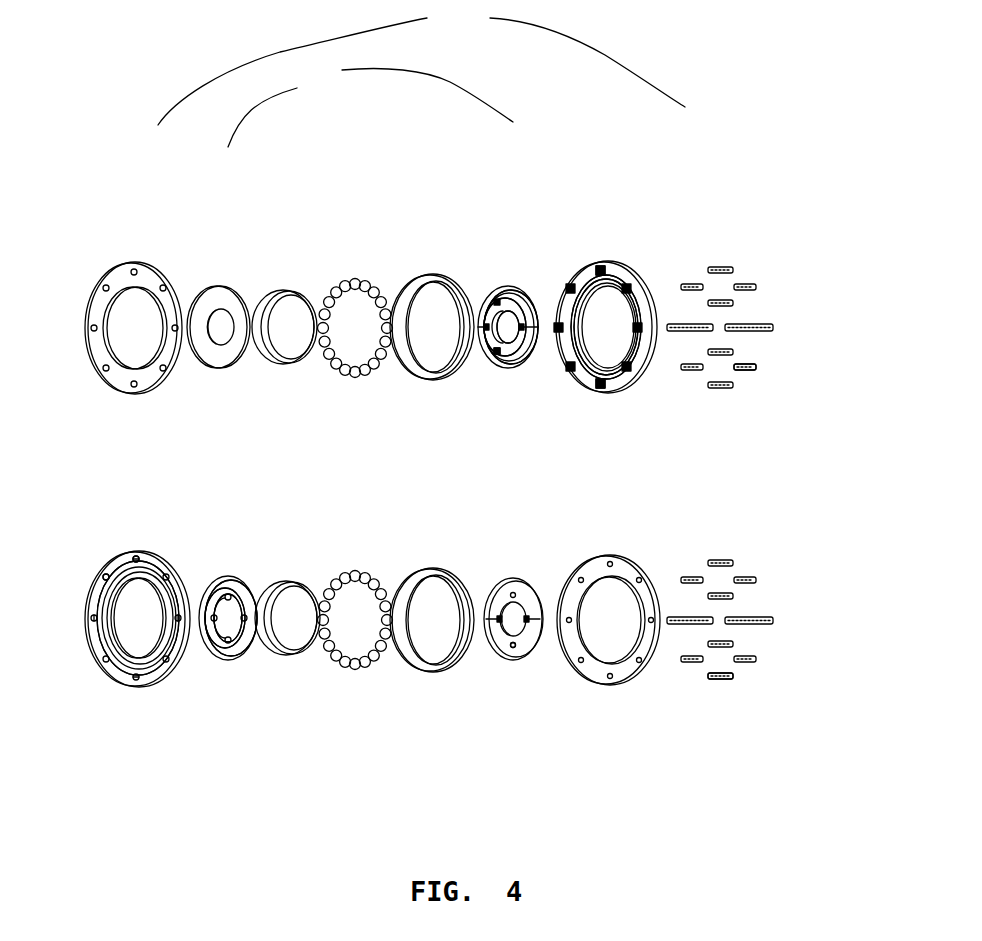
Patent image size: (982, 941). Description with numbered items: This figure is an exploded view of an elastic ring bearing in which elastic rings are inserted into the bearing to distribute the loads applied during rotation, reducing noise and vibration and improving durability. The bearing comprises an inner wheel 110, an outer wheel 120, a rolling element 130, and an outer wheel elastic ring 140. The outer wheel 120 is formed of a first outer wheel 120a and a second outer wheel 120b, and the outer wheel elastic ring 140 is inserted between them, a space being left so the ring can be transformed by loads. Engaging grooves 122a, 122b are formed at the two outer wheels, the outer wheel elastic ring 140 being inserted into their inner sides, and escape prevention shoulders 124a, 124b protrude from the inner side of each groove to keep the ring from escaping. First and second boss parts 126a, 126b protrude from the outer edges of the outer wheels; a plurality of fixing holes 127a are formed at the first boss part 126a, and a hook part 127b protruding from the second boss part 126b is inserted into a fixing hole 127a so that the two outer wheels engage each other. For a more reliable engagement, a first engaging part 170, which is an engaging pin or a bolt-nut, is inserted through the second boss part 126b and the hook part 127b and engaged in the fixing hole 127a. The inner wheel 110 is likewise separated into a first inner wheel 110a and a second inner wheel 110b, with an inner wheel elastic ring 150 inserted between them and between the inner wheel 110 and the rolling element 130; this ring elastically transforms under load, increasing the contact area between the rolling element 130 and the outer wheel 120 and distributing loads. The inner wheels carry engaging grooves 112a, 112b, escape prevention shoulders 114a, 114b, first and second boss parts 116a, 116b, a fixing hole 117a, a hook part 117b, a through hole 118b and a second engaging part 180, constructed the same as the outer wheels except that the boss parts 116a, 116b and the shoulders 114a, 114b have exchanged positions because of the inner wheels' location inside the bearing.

The inner wheel 110 is at (370, 105).
The outer wheel 120 is at (421, 65).
The first inner wheel 110a is at (209, 277).
The second inner wheel 110b is at (522, 285).
The engaging groove 112a is at (213, 660).
The engaging groove 112b is at (510, 368).
The escape prevention shoulder 114a is at (213, 576).
The escape prevention shoulder 114b is at (520, 373).
The first boss part 116a is at (248, 655).
The second boss part 116b is at (484, 298).
The fixing hole 117a is at (232, 578).
The hook part 117b is at (537, 300).
The through hole 118b is at (514, 575).
The first outer wheel 120a is at (135, 257).
The second outer wheel 120b is at (640, 265).
The engaging groove 122a is at (122, 684).
The engaging groove 122b is at (602, 386).
The escape prevention shoulder 124a is at (150, 557).
The escape prevention shoulder 124b is at (600, 266).
The first boss part 126a is at (158, 685).
The second boss part 126b is at (623, 380).
The fixing hole 127a is at (103, 574).
The hook part 127b is at (596, 383).
The rolling element 130 is at (353, 283).
The outer wheel elastic ring 140 is at (430, 272).
The inner wheel elastic ring 150 is at (285, 289).
The first engaging part 170 is at (720, 267).
The second engaging part 180 is at (732, 368).